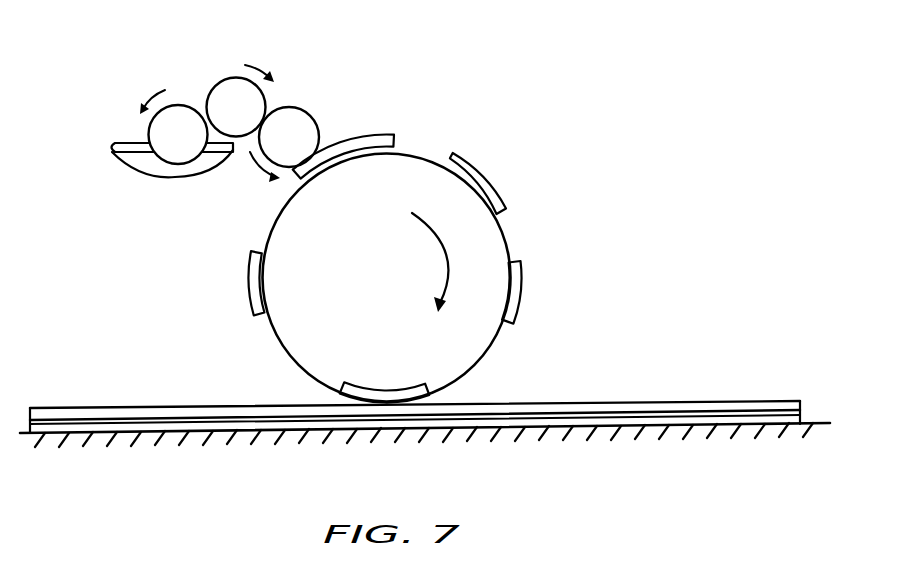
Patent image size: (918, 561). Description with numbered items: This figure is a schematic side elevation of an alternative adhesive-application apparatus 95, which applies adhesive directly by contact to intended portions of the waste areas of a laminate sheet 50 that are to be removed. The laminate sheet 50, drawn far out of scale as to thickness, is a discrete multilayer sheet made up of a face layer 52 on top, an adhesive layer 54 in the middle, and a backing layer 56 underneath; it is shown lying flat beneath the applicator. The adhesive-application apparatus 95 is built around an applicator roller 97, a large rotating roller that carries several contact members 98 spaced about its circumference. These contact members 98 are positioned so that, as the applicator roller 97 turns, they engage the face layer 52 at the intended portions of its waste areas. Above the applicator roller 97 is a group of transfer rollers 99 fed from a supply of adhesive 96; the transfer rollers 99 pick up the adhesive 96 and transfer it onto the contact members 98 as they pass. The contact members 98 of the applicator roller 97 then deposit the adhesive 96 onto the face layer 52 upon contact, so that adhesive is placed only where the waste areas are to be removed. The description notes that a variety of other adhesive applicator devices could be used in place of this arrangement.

The laminate sheet 50 is at (425, 371).
The face layer 52 is at (570, 403).
The adhesive layer 54 is at (685, 417).
The backing layer 56 is at (650, 420).
The adhesive-application apparatus 95 is at (430, 238).
The adhesive 96 is at (130, 153).
The applicator roller 97 is at (498, 242).
The contact members 98 is at (520, 287).
The transfer rollers 99 is at (197, 55).